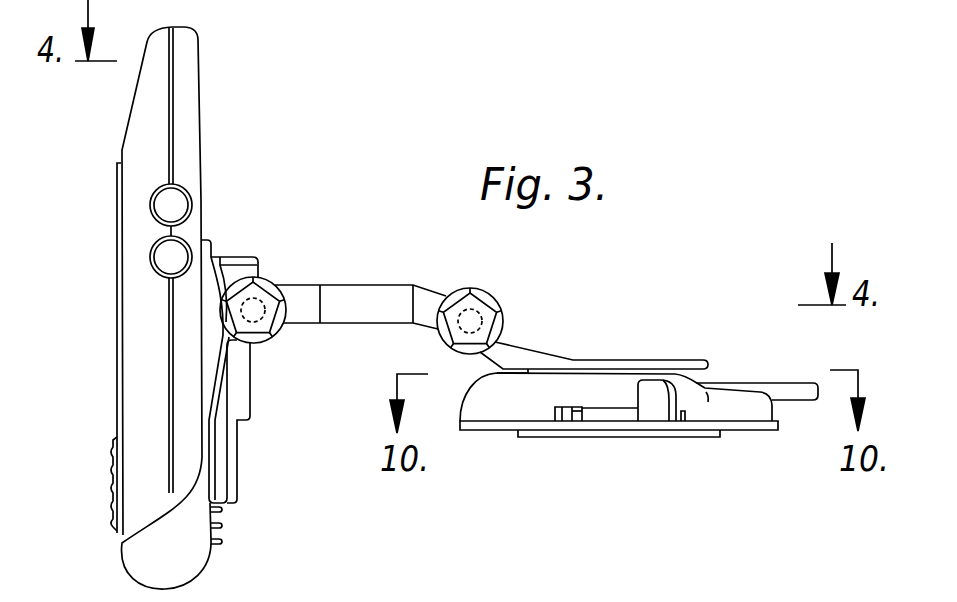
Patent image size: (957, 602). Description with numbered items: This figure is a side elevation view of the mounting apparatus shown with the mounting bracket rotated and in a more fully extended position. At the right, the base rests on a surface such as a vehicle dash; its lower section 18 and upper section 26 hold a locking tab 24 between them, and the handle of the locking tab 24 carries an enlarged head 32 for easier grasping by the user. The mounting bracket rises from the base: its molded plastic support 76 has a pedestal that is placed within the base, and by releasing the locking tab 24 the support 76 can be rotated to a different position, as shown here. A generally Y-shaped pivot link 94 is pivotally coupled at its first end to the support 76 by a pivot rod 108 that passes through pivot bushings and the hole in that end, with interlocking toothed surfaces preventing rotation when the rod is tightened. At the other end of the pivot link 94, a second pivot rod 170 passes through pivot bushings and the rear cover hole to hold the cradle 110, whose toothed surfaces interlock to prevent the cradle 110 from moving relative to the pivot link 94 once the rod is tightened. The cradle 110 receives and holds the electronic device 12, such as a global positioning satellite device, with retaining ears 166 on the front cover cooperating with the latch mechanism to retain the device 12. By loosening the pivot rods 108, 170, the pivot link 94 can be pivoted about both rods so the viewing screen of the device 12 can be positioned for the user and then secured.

The electronic device 12 is at (198, 143).
The lower section 18 is at (762, 427).
The locking tab 24 is at (593, 417).
The upper section 26 is at (463, 410).
The enlarged head 32 is at (645, 410).
The support 76 is at (688, 360).
The pivot link 94 is at (401, 285).
The pivot rod 108 is at (488, 302).
The cradle 110 is at (237, 447).
The retaining ears 166 is at (200, 566).
The pivot rod 170 is at (268, 288).